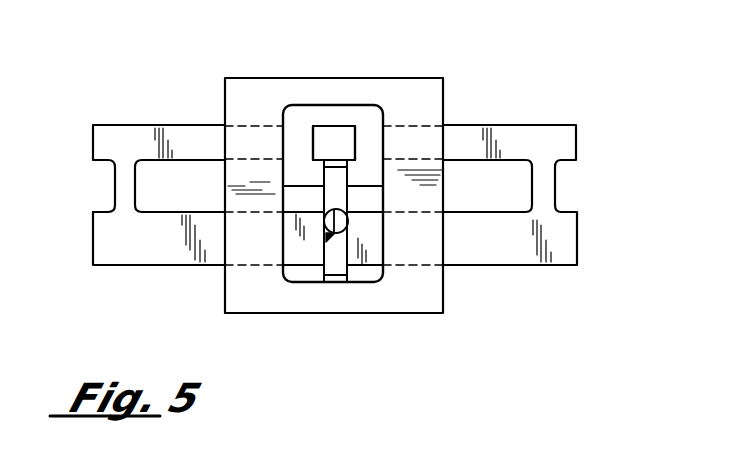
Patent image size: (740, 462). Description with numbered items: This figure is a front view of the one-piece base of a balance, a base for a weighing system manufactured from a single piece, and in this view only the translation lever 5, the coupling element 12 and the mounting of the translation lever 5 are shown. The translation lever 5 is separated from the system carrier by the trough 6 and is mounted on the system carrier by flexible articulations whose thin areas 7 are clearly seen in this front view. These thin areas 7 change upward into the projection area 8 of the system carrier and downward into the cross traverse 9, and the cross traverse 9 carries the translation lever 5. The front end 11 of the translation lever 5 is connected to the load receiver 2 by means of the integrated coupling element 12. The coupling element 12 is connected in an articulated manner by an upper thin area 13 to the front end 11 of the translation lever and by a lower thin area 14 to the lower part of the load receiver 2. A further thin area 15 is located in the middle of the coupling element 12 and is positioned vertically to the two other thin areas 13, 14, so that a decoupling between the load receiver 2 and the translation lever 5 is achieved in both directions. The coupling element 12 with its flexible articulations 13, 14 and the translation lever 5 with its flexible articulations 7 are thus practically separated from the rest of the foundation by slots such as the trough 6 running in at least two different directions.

The load receiver 2 is at (418, 95).
The translation lever 5 is at (336, 142).
The trough 6 is at (321, 152).
The thin areas 7 is at (123, 183).
The projection area 8 is at (108, 145).
The cross traverse 9 is at (162, 248).
The front end 11 is at (336, 142).
The coupling element 12 is at (326, 237).
The upper thin area 13 is at (345, 193).
The lower thin area 14 is at (338, 266).
The further thin area 15 is at (348, 221).